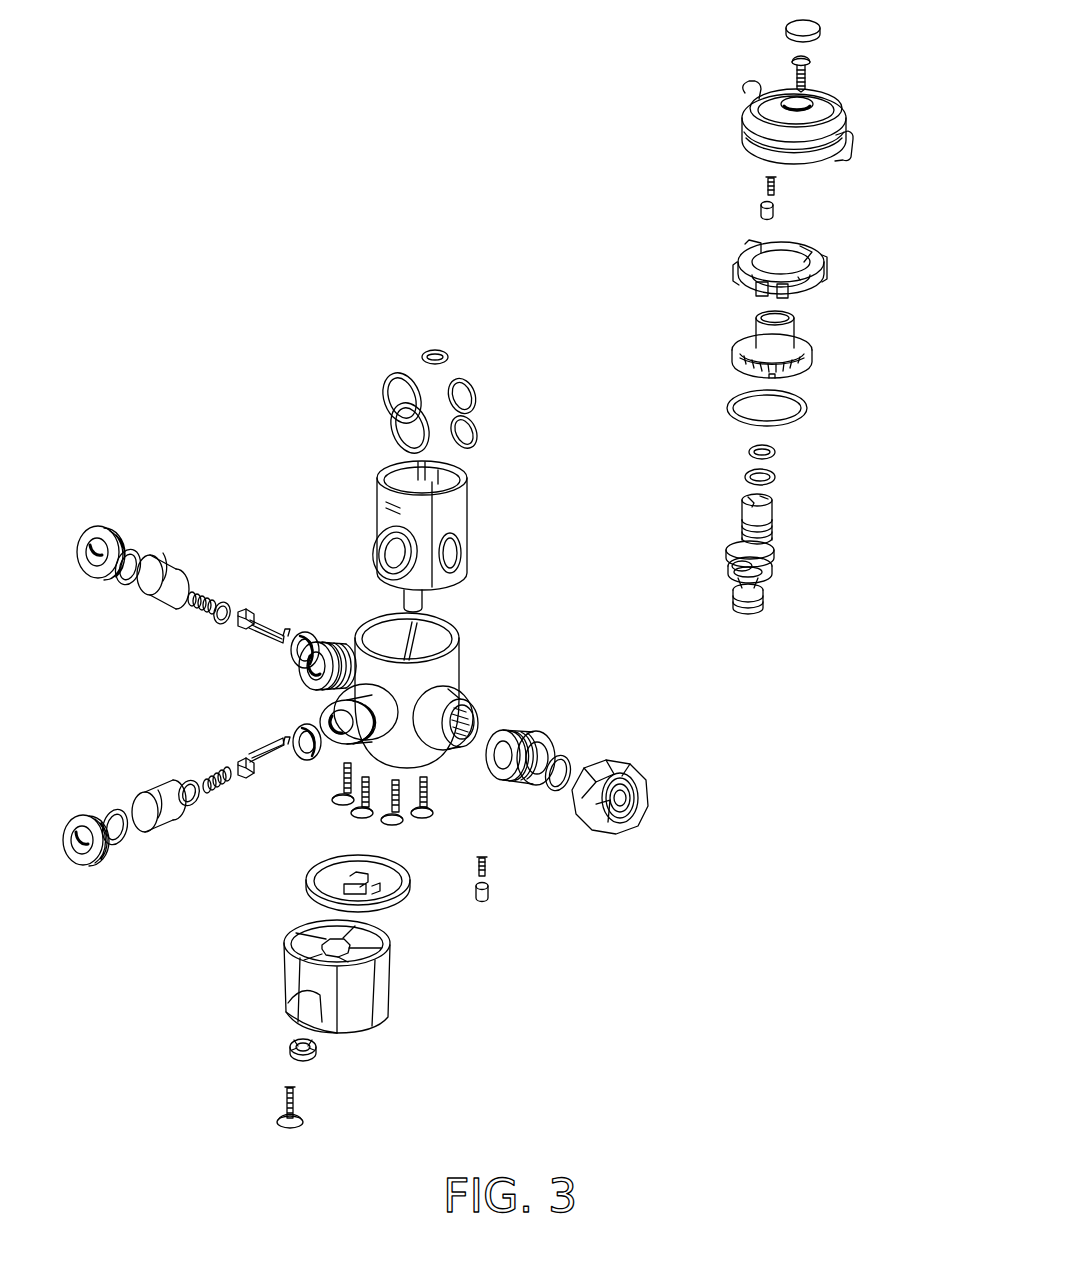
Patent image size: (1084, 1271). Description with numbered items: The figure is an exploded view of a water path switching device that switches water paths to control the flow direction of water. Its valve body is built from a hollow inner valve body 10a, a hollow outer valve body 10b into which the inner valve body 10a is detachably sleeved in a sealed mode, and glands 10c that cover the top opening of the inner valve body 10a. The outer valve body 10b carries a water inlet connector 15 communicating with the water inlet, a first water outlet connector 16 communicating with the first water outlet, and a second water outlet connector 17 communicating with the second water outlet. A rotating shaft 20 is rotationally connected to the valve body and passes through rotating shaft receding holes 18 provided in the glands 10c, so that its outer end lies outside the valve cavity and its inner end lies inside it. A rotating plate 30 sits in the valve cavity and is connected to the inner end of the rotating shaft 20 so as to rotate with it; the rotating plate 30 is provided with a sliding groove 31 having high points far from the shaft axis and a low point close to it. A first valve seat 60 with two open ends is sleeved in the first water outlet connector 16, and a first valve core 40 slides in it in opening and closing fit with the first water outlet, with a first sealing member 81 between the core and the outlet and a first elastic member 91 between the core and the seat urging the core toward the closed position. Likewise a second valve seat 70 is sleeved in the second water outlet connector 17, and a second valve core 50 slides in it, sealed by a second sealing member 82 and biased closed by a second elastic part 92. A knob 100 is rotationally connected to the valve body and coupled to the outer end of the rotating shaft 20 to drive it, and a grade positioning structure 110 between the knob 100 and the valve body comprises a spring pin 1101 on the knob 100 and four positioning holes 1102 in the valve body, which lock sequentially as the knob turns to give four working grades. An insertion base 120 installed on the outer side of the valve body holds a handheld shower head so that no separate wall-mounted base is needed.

The knob 100 is at (850, 142).
The grade positioning structure 110 is at (668, 225).
The spring pin 1101 is at (756, 212).
The positioning holes 1102 is at (796, 272).
The rotating shaft receding holes 18 is at (802, 279).
The glands 10c is at (752, 291).
The rotating shaft 20 is at (776, 525).
The rotating plate 30 is at (771, 580).
The sliding groove 31 is at (725, 565).
The inner valve body 10a is at (376, 503).
The outer valve body 10b is at (429, 690).
The second water outlet connector 17 is at (336, 633).
The first water outlet connector 16 is at (323, 712).
The water inlet connector 15 is at (486, 718).
The second valve seat 70 is at (304, 640).
The second elastic part 92 is at (188, 610).
The second sealing member 82 is at (208, 623).
The second valve core 50 is at (254, 641).
The first valve core 40 is at (263, 745).
The first elastic member 91 is at (211, 771).
The first sealing member 81 is at (183, 782).
The first valve seat 60 is at (100, 852).
The insertion base 120 is at (363, 1004).